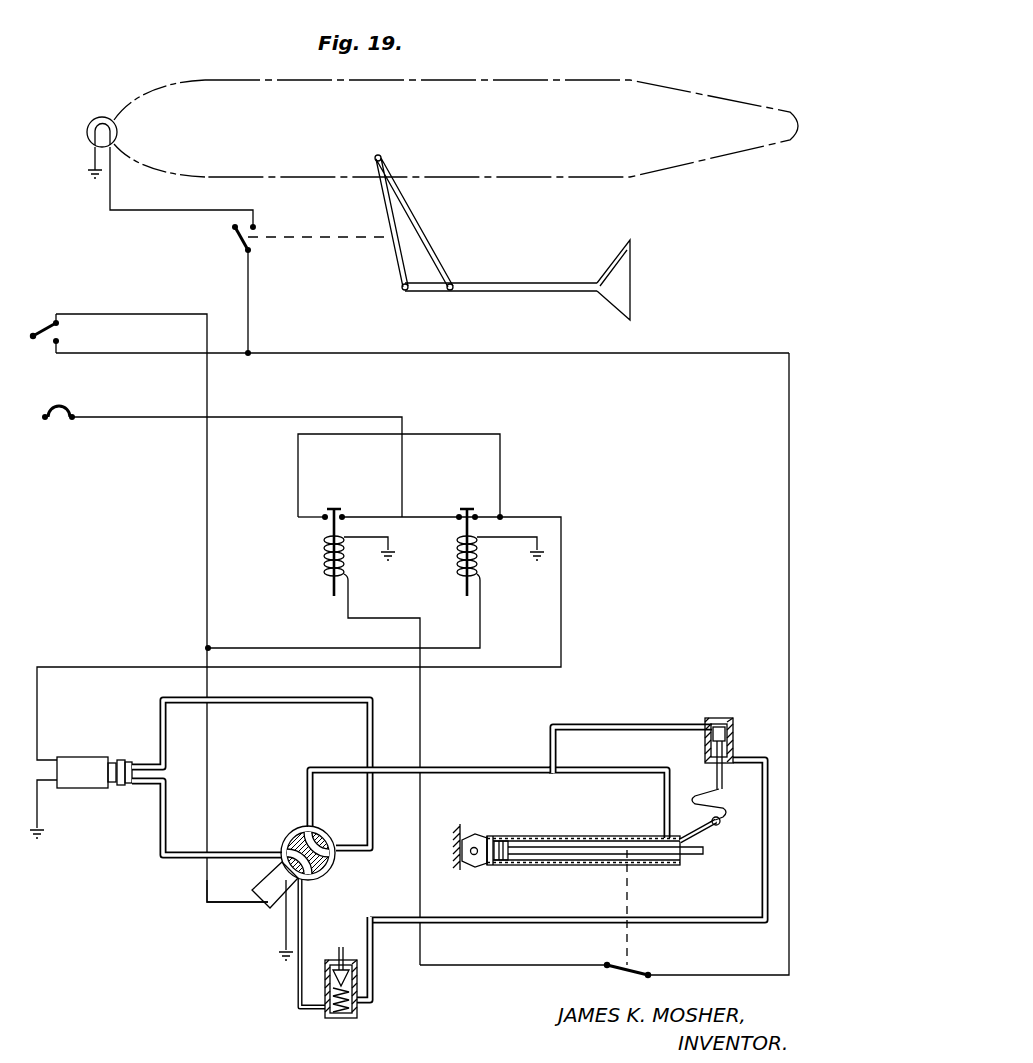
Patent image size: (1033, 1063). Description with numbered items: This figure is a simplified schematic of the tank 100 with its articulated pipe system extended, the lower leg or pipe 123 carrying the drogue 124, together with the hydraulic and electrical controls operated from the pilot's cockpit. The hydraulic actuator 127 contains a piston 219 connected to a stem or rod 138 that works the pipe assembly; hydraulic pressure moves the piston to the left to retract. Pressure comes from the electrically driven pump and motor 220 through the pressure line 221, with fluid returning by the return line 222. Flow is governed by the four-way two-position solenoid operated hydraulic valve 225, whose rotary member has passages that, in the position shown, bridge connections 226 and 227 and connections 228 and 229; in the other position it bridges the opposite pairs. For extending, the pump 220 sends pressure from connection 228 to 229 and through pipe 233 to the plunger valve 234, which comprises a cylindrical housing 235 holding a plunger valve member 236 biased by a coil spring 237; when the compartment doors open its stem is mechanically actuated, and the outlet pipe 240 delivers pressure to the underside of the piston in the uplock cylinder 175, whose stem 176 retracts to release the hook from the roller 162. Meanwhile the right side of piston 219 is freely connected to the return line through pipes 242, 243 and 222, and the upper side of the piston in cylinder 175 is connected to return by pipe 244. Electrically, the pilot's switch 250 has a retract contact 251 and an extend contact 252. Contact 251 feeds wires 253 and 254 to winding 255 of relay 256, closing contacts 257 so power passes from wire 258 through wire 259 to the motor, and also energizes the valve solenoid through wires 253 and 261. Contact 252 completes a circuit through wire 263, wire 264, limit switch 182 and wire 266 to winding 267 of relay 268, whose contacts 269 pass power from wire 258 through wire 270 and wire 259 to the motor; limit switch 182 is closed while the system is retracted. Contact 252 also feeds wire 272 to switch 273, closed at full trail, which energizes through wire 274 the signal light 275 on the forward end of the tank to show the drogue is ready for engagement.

The tank 100 is at (545, 78).
The intermediate pipe or leg 123 is at (494, 282).
The drogue 124 is at (612, 268).
The hydraulic actuator 127 is at (563, 865).
The piston rod 138 is at (695, 856).
The roller 162 is at (714, 826).
The hydraulic cylinder 175 is at (736, 730).
The stem 176 is at (722, 784).
The limit switch 182 is at (633, 973).
The piston 219 is at (508, 865).
The pump and motor 220 is at (92, 791).
The pressure line 221 is at (234, 857).
The return line 222 is at (258, 701).
The solenoid operated hydraulic valve 225 is at (325, 836).
The connection 226 is at (314, 830).
The connection 227 is at (360, 822).
The connection 228 is at (274, 864).
The connection 229 is at (312, 883).
The pipe 233 is at (304, 960).
The plunger valve 234 is at (378, 999).
The cylindrical housing 235 is at (356, 970).
The plunger valve member 236 is at (331, 977).
The coil spring 237 is at (341, 1019).
The outlet pipe 240 is at (530, 921).
The pipe 242 is at (588, 768).
The pipe 243 is at (441, 765).
The pipe 244 is at (625, 701).
The switch 250 is at (38, 330).
The contact 251 is at (62, 322).
The contact 252 is at (66, 341).
The wire 253 is at (205, 530).
The wire 254 is at (326, 648).
The winding 255 is at (479, 563).
The relay 256 is at (454, 546).
The relay contacts 257 is at (465, 506).
The wire 258 is at (412, 400).
The wire 259 is at (566, 642).
The wire 261 is at (211, 792).
The wire 263 is at (227, 360).
The wire 264 is at (788, 548).
The wire 266 is at (420, 948).
The winding 267 is at (345, 562).
The relay 268 is at (318, 556).
The relay contacts 269 is at (350, 502).
The wire 270 is at (452, 432).
The wire 272 is at (250, 334).
The switch 273 is at (241, 232).
The wire 274 is at (190, 212).
The signal light 275 is at (90, 124).